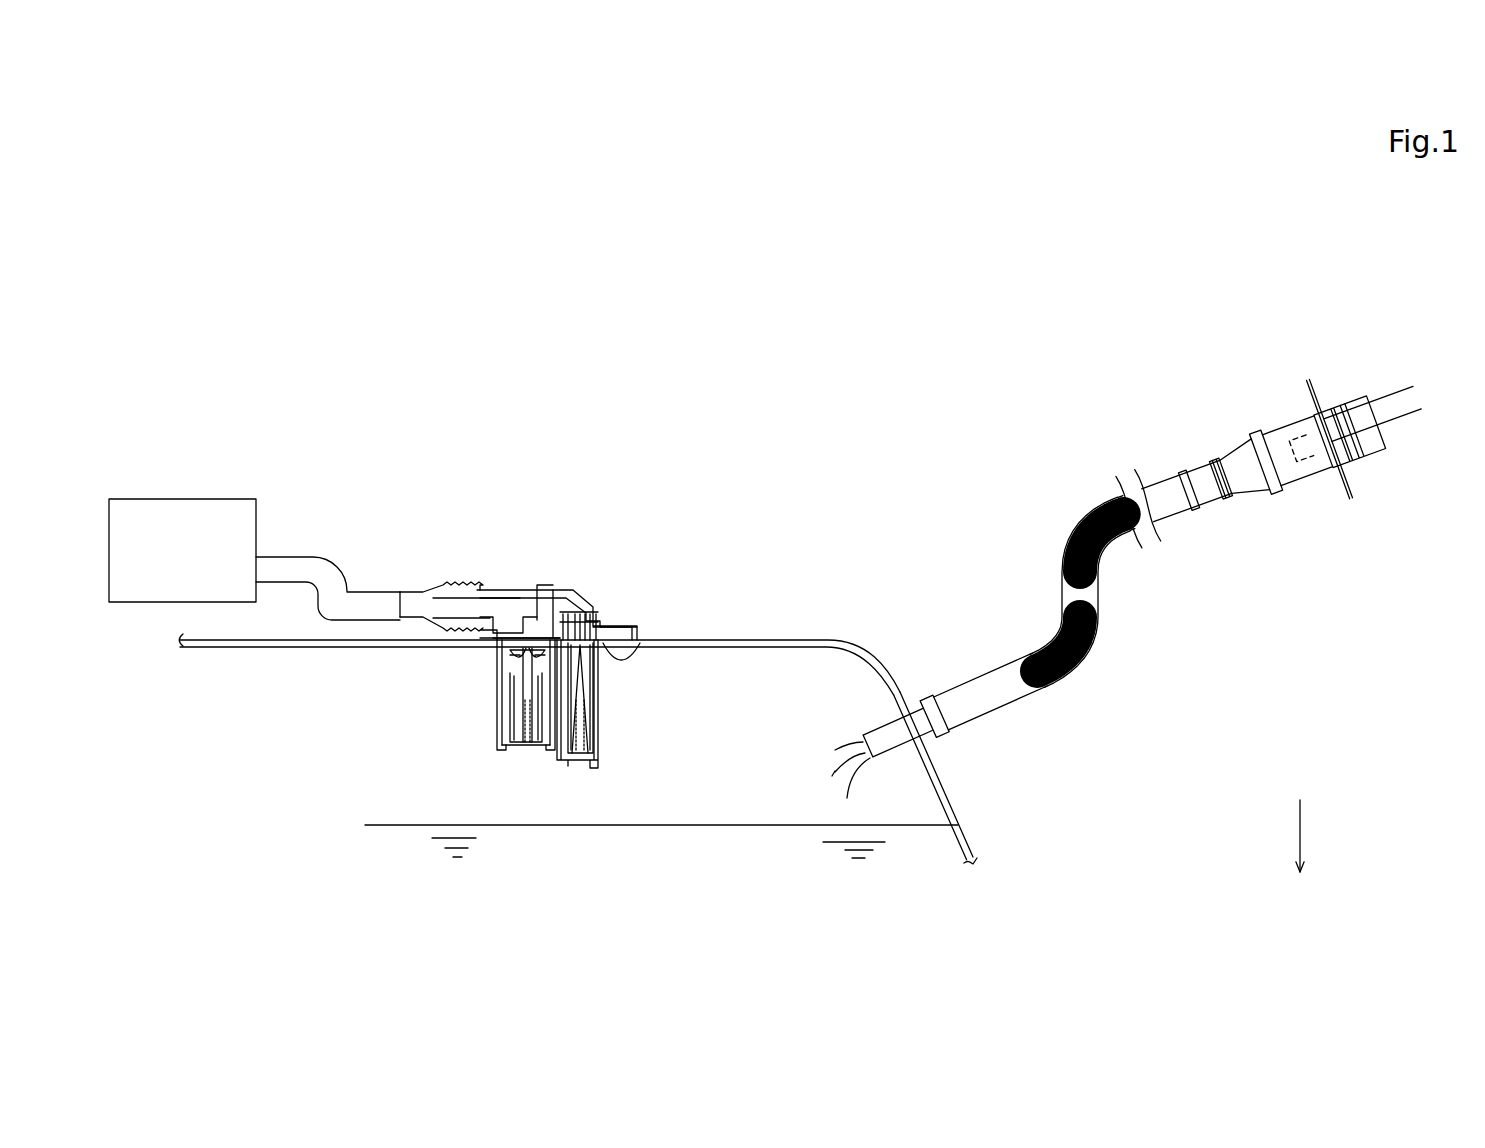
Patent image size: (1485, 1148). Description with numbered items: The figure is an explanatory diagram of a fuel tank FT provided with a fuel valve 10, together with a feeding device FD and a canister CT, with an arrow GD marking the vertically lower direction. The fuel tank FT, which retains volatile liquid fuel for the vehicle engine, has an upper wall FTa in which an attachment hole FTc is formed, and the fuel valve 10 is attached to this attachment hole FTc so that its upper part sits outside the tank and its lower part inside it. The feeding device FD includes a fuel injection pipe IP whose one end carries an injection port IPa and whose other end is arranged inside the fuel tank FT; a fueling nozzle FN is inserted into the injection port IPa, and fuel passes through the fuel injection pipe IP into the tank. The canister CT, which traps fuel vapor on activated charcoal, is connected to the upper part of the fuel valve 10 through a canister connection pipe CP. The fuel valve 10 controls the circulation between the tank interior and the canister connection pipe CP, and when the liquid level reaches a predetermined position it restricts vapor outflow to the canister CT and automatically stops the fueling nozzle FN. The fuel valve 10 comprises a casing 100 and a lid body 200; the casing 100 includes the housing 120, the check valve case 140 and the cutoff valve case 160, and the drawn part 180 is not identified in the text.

The canister CT is at (208, 506).
The canister connection pipe CP is at (317, 562).
The lid body 200 is at (494, 587).
The fuel valve 10 is at (583, 560).
The housing 120 is at (550, 637).
The check valve case 140 is at (592, 615).
The attachment hole FTc is at (641, 650).
The upper wall FTa is at (708, 640).
The fuel tank FT is at (968, 836).
The casing 100 is at (537, 713).
The first valve 180 is at (497, 720).
The cutoff valve case 160 is at (597, 695).
The feeding device FD is at (1127, 654).
The fuel injection pipe IP is at (1255, 490).
The injection port IPa is at (1375, 455).
The fueling nozzle FN is at (1381, 386).
The vertically lower direction GD is at (1321, 836).